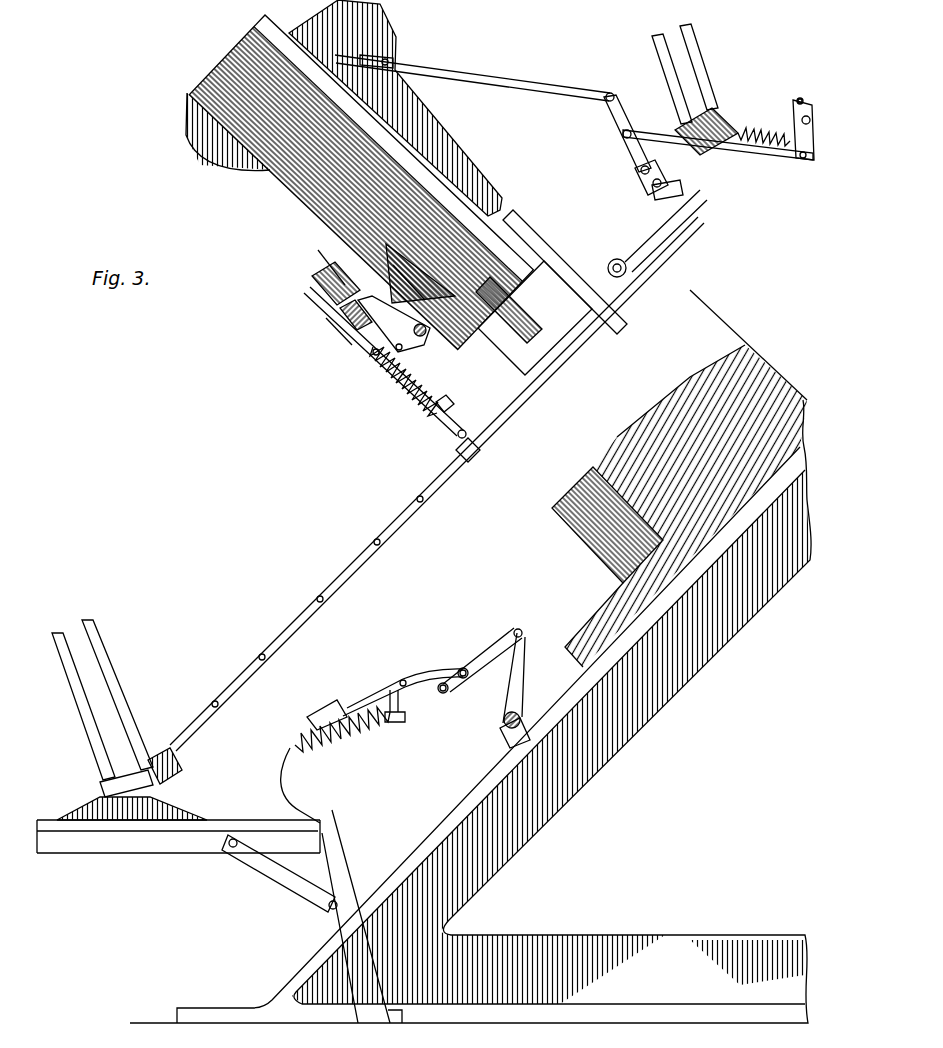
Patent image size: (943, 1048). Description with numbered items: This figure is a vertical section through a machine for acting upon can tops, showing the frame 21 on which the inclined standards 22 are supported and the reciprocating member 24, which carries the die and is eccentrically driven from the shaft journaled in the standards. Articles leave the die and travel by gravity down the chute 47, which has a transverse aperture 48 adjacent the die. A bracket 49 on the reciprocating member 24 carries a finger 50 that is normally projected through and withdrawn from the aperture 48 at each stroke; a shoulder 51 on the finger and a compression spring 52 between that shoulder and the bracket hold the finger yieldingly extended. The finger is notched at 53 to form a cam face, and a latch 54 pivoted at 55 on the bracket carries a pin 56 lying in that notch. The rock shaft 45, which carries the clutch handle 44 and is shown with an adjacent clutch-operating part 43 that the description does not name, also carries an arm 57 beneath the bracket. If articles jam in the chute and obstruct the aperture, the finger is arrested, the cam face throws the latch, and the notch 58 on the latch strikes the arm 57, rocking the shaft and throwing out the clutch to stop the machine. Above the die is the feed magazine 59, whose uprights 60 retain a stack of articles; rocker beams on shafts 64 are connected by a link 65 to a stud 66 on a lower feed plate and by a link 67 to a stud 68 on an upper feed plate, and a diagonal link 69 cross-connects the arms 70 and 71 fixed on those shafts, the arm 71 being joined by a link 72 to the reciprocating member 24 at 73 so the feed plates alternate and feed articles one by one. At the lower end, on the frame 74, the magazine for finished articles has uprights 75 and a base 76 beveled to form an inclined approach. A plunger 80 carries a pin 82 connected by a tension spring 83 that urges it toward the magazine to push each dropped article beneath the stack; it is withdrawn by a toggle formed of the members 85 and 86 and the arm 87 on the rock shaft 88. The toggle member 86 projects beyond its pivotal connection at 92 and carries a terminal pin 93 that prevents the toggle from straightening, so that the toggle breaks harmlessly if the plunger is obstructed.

The frame 21 is at (435, 840).
The inclined standards 22 is at (498, 210).
The reciprocating member 24 is at (268, 22).
The lever 43 is at (394, 318).
The handle 44 is at (425, 300).
The rock shaft 45 is at (424, 333).
The chute 47 is at (410, 520).
The transverse aperture 48 is at (470, 462).
The bracket 49 is at (330, 262).
The finger 50 is at (308, 294).
The shoulder 51 is at (443, 400).
The compression spring 52 is at (396, 398).
The notch 53 is at (355, 332).
The latch 54 is at (420, 273).
The pivot 55 is at (318, 282).
The pin 56 is at (340, 330).
The arm 57 is at (404, 350).
The notch 58 is at (378, 356).
The feed magazine 59 is at (732, 120).
The uprights 60 is at (675, 80).
The shafts 64 is at (790, 108).
The link 65 is at (662, 192).
The stud 66 is at (694, 190).
The link 67 is at (800, 96).
The stud 68 is at (772, 132).
The link 69 is at (645, 136).
The arm 70 is at (796, 156).
The arm 71 is at (640, 155).
The link 72 is at (505, 80).
The connection point 73 is at (393, 55).
The frame 74 is at (155, 855).
The uprights 75 is at (110, 735).
The base 76 is at (172, 756).
The plunger 80 is at (365, 697).
The pin 82 is at (398, 720).
The tension spring 83 is at (352, 733).
The toggle member 85 is at (432, 676).
The toggle member 86 is at (492, 652).
The arm 87 is at (525, 662).
The rock shaft 88 is at (502, 722).
The pivotal connection 92 is at (464, 678).
The terminal pin 93 is at (442, 692).